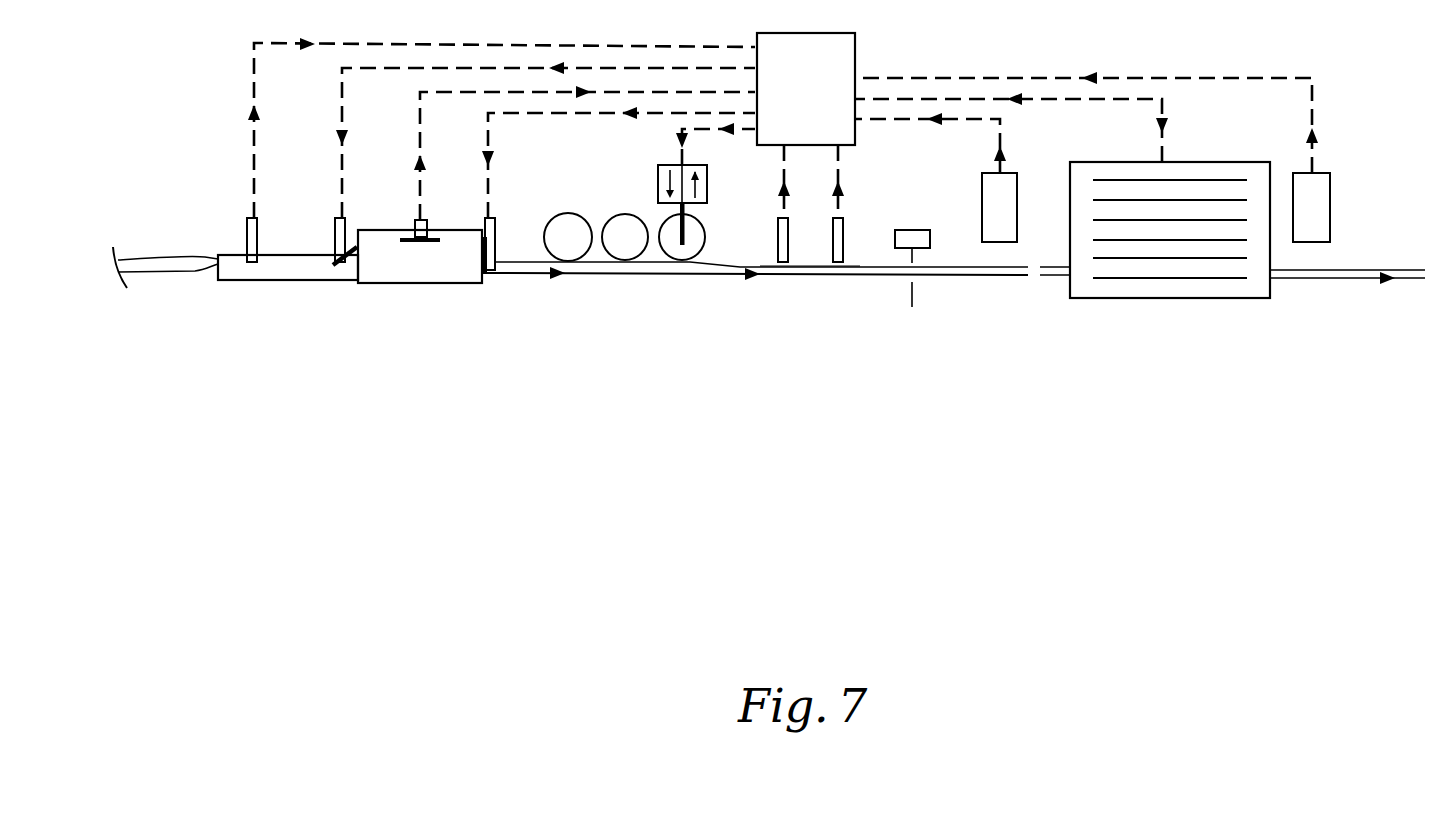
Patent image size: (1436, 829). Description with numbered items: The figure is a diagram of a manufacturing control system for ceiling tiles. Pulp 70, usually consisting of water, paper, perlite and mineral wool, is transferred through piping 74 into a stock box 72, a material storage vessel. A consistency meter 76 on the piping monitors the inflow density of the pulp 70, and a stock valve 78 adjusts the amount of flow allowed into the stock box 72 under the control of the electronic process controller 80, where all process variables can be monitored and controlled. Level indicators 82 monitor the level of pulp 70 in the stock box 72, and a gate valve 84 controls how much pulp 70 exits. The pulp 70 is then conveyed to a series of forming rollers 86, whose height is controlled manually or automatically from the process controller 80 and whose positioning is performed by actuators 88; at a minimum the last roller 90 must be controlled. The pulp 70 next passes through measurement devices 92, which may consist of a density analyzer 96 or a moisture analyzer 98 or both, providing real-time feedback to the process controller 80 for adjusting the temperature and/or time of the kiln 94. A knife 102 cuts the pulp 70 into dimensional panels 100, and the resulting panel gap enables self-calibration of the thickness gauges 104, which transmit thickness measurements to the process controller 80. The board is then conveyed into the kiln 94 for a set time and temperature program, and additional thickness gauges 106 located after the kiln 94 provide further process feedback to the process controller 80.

The pulp 70 is at (187, 270).
The stock box 72 is at (393, 283).
The piping 74 is at (282, 282).
The consistency meter 76 is at (260, 230).
The stock valve 78 is at (345, 233).
The electronic process controller 80 is at (807, 40).
The level indicators 82 is at (425, 215).
The gate valve 84 is at (490, 213).
The forming rollers 86 is at (628, 212).
The actuators 88 is at (707, 183).
The last roller 90 is at (695, 238).
The measurement devices 92 is at (810, 299).
The kiln 94 is at (1222, 168).
The density analyzer 96 is at (788, 240).
The moisture analyzer 98 is at (843, 240).
The dimensional panels 100 is at (962, 280).
The knife 102 is at (930, 238).
The thickness gauges 104 is at (1007, 193).
The additional thickness gauges 106 is at (1318, 197).